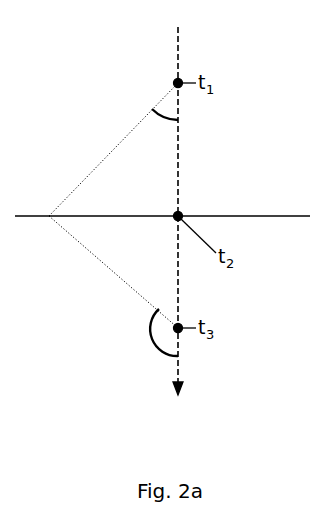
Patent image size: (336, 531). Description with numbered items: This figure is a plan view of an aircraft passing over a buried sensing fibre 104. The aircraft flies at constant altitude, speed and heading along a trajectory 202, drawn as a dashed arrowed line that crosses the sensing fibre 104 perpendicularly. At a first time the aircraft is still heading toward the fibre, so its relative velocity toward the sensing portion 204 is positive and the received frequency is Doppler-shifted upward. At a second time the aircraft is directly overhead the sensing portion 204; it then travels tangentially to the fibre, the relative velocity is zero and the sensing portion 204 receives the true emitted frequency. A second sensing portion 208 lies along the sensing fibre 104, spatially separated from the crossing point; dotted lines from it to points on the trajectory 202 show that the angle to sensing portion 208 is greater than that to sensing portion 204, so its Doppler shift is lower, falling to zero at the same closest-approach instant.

The sensing fibre 104 is at (293, 216).
The trajectory 202 is at (169, 225).
The sensing portion 204 is at (193, 202).
The sensing portion 208 is at (47, 228).